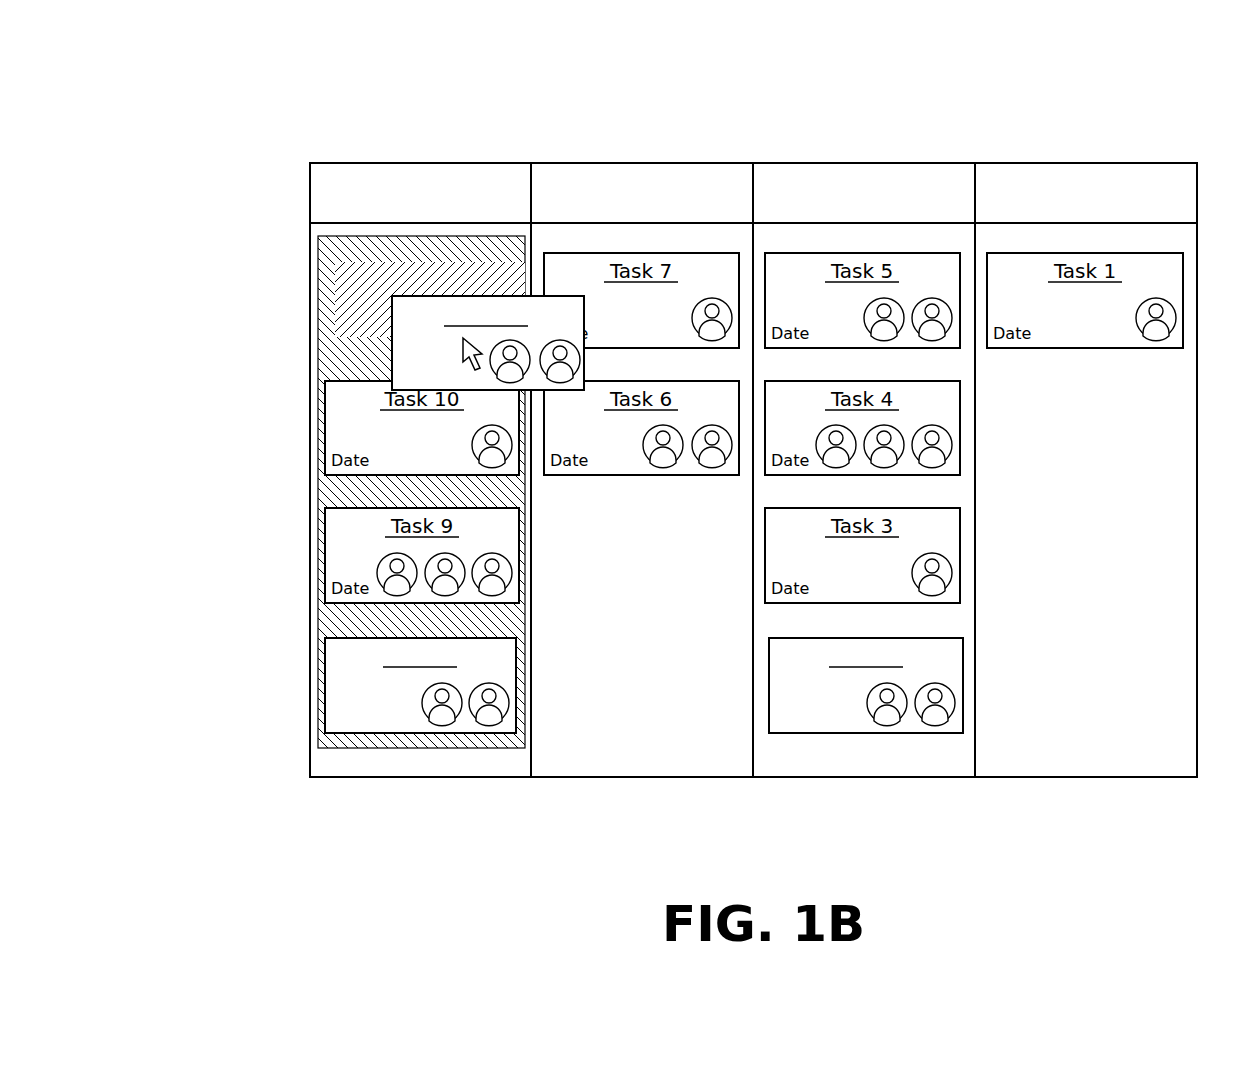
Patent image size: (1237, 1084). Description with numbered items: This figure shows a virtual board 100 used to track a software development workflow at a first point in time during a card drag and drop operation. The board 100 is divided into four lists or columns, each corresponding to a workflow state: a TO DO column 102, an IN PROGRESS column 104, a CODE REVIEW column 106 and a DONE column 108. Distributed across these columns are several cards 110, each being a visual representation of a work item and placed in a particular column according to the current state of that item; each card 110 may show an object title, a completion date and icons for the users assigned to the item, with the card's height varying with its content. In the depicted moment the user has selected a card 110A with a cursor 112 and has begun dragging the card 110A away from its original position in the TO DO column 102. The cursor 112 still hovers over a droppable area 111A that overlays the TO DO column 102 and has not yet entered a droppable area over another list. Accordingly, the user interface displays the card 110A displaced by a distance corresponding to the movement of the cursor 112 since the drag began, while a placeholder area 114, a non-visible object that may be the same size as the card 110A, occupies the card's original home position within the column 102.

The virtual board 100 is at (393, 116).
The TO DO column 102 is at (479, 204).
The IN PROGRESS column 104 is at (729, 204).
The CODE REVIEW column 106 is at (956, 204).
The DONE column 108 is at (1141, 204).
The card 110 is at (345, 735).
The dragged card 110A is at (392, 343).
The droppable area 111A is at (391, 537).
The cursor 112 is at (462, 350).
The placeholder area 114 is at (327, 305).